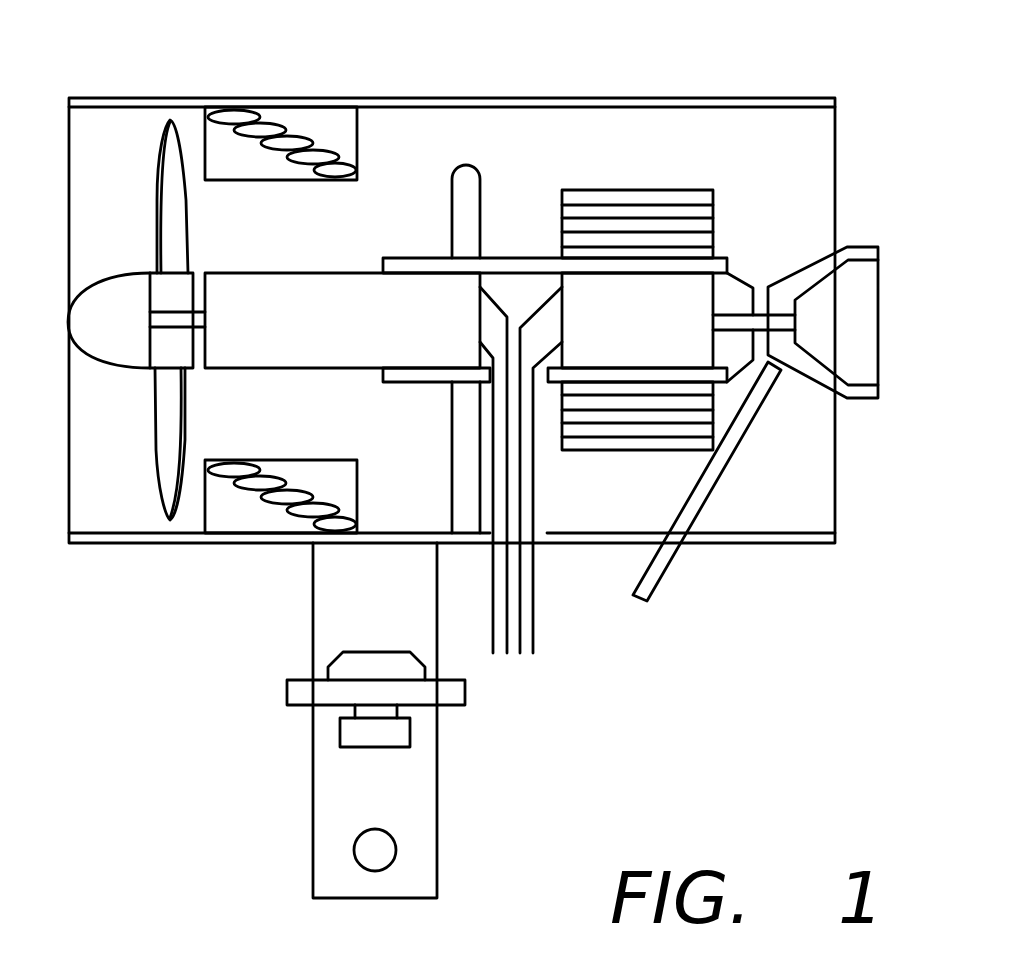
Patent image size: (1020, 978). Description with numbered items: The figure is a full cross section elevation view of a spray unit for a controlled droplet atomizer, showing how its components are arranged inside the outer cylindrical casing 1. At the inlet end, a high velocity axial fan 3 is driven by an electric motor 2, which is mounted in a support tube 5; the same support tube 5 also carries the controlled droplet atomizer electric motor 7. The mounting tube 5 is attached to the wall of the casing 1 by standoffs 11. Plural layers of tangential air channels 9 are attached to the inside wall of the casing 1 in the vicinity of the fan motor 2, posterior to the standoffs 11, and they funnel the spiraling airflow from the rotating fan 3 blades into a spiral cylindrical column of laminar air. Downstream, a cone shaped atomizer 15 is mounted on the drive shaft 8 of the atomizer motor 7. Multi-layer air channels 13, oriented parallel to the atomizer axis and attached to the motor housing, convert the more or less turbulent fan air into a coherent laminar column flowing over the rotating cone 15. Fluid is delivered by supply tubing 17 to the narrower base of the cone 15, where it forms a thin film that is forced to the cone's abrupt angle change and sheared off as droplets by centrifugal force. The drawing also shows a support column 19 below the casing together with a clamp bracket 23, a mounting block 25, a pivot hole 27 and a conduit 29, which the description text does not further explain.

The outer cylindrical casing 1 is at (443, 97).
The electric motor 2 is at (376, 270).
The axial fan 3 is at (165, 150).
The support tube 5 is at (543, 258).
The atomizer electric motor 7 is at (680, 275).
The drive shaft 8 is at (748, 298).
The tangential air channels 9 is at (276, 120).
The standoffs 11 is at (472, 163).
The multi-layer air channels 13 is at (620, 190).
The cone shaped atomizer 15 is at (863, 243).
The supply tubing 17 is at (672, 566).
The support column 19 is at (313, 587).
The clamp bracket 23 is at (287, 697).
The mounting block 25 is at (340, 737).
The pivot hole 27 is at (354, 857).
The conduit 29 is at (527, 657).